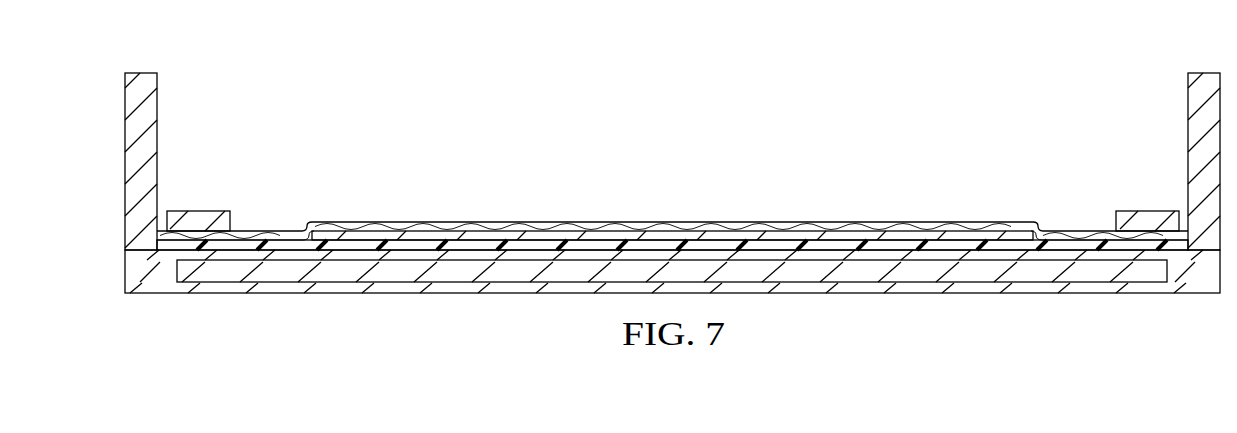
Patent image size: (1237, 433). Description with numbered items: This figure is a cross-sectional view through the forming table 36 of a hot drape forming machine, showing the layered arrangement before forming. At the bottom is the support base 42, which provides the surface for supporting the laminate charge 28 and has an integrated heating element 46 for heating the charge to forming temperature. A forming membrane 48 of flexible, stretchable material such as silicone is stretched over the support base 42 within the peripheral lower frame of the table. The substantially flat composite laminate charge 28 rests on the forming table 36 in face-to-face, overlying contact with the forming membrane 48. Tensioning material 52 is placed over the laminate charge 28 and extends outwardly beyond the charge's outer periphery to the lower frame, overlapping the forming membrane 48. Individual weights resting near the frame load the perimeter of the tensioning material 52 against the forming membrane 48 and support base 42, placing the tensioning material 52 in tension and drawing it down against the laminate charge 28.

The forming table 36 is at (744, 74).
The support base 42 is at (156, 283).
The heating element 46 is at (1040, 273).
The forming membrane 48 is at (282, 245).
The tensioning material 52 is at (490, 228).
The composite laminate charge 28 is at (845, 236).